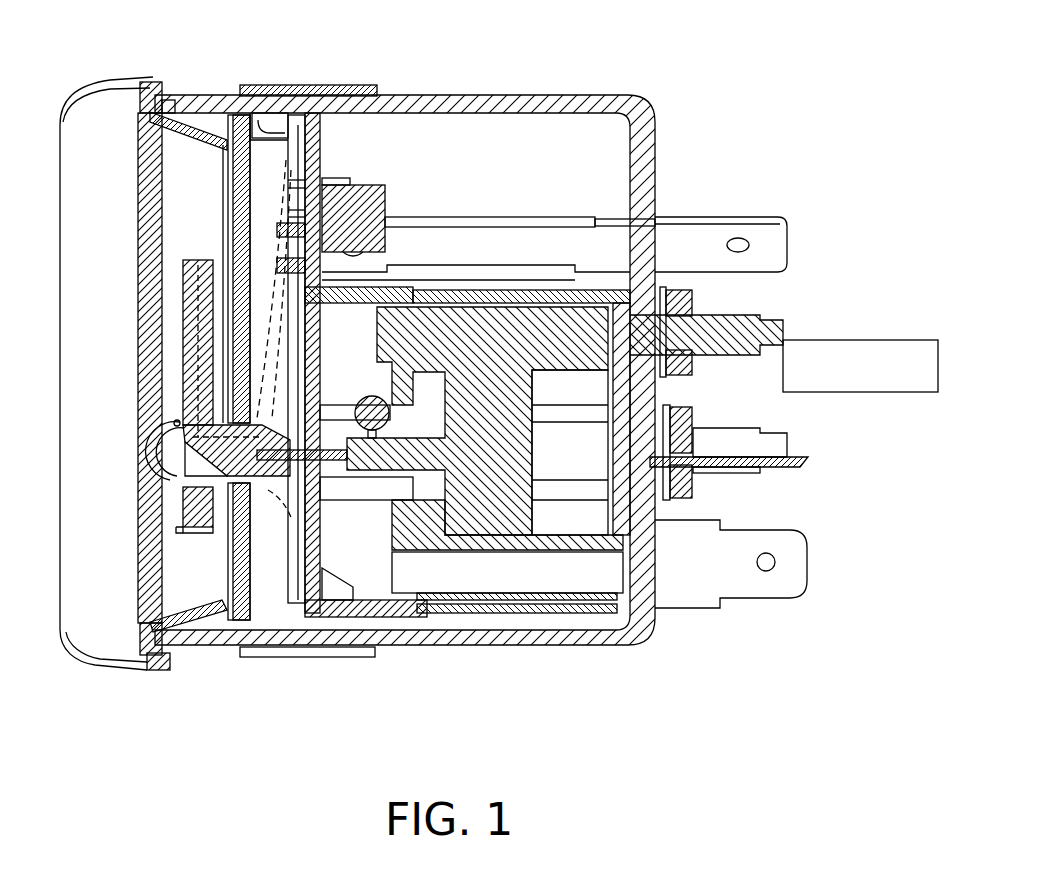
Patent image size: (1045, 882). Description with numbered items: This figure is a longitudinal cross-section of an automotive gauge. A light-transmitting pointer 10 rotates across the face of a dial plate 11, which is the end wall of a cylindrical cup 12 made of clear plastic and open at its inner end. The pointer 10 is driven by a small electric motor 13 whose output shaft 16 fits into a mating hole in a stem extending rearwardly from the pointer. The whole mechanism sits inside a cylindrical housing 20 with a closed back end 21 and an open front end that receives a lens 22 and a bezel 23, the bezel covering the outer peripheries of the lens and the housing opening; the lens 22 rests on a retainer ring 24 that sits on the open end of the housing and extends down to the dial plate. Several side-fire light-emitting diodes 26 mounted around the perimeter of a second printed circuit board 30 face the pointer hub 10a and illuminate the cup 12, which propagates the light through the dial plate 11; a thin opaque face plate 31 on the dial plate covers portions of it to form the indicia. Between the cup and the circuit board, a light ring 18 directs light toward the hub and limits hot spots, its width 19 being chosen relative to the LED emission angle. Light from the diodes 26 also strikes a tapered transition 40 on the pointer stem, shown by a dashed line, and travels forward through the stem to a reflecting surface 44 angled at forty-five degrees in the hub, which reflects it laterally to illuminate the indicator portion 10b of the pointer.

The light-transmitting pointer 10 is at (180, 436).
The pointer hub 10a is at (207, 533).
The indicator portion 10b is at (183, 330).
The dial plate 11 is at (233, 113).
The cylindrical cup 12 is at (257, 620).
The electric motor 13 is at (533, 462).
The output shaft 16 is at (330, 462).
The light ring 18 is at (262, 126).
The width of the light ring 19 is at (276, 128).
The cylindrical housing 20 is at (197, 107).
The closed back end 21 is at (660, 203).
The lens 22 is at (140, 262).
The bezel 23 is at (84, 645).
The retainer ring 24 is at (183, 622).
The side-fire light-emitting diodes 26 is at (300, 122).
The second printed circuit board 30 is at (313, 122).
The opaque face plate 31 is at (223, 180).
The tapered transition 40 is at (288, 570).
The reflecting surface 44 is at (173, 478).